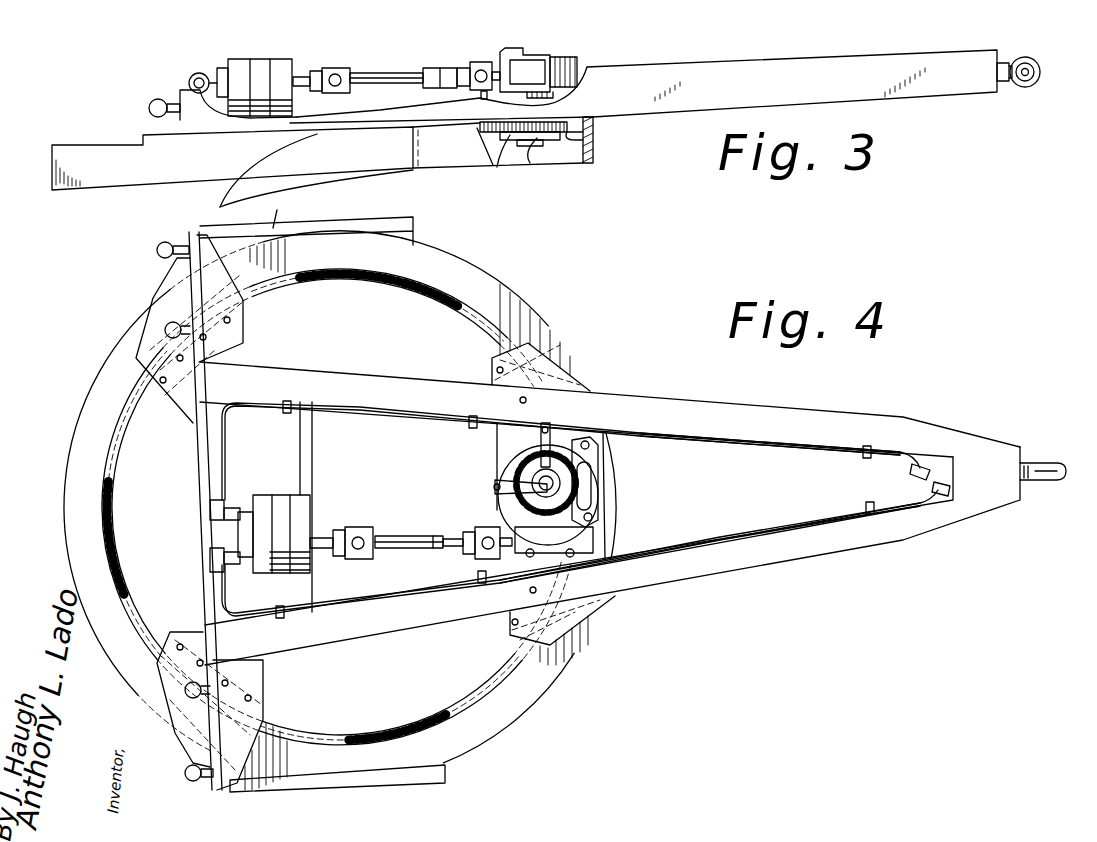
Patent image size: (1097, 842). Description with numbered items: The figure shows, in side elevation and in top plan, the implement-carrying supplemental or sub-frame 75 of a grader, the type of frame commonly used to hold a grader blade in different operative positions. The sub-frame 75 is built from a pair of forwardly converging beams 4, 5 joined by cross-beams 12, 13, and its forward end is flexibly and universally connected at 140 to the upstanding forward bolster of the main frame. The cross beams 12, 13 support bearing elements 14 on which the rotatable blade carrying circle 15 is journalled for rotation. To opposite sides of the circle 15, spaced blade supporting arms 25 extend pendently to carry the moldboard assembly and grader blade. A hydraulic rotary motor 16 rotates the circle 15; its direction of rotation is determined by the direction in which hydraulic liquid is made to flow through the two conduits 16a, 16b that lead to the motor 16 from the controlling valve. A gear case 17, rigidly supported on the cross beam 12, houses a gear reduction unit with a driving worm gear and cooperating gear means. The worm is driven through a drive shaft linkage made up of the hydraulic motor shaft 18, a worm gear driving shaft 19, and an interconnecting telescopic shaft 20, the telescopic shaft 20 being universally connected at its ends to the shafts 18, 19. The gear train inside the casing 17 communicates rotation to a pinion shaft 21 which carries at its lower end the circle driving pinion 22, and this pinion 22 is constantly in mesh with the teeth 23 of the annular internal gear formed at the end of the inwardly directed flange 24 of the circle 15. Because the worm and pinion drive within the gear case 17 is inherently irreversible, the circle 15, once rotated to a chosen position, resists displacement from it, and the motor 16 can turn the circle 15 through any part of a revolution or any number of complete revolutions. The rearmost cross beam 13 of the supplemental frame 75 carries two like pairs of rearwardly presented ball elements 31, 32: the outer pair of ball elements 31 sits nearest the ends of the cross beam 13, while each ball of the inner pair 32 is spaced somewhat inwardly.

In FIG. 3, the beam 4 is at (736, 62).
In FIG. 4, the beam 4 is at (683, 578).
In FIG. 4, the beam 5 is at (733, 430).
In FIG. 4, the cross-beam 12 is at (603, 538).
In FIG. 4, the cross-beam 13 is at (230, 463).
In FIG. 4, the bearing element 14 is at (157, 380).
In FIG. 4, the blade carrying circle 15 is at (485, 290).
In FIG. 3, the hydraulic rotary motor 16 is at (255, 60).
In FIG. 4, the hydraulic rotary motor 16 is at (262, 506).
In FIG. 4, the conduit 16a is at (222, 592).
In FIG. 4, the conduit 16b is at (217, 452).
In FIG. 3, the gear case 17 is at (556, 62).
In FIG. 4, the gear case 17 is at (517, 490).
In FIG. 3, the hydraulic motor shaft 18 is at (306, 72).
In FIG. 4, the hydraulic motor shaft 18 is at (336, 530).
In FIG. 3, the worm gear driving shaft 19 is at (464, 62).
In FIG. 4, the worm gear driving shaft 19 is at (485, 528).
In FIG. 3, the telescopic shaft 20 is at (384, 70).
In FIG. 4, the telescopic shaft 20 is at (410, 549).
In FIG. 3, the pinion shaft 21 is at (527, 165).
In FIG. 4, the pinion shaft 21 is at (523, 472).
In FIG. 3, the circle driving pinion 22 is at (497, 168).
In FIG. 4, the teeth 23 is at (428, 288).
In FIG. 3, the inwardly directed flange 24 is at (594, 136).
In FIG. 3, the blade supporting arm 25 is at (270, 192).
In FIG. 4, the blade supporting arm 25 is at (316, 784).
In FIG. 4, the ball element 31 is at (156, 250).
In FIG. 4, the ball element 32 is at (165, 330).
In FIG. 3, the supplemental frame 75 is at (690, 113).
In FIG. 4, the supplemental frame 75 is at (620, 373).
In FIG. 3, the universal connection 140 is at (1020, 86).
In FIG. 4, the universal connection 140 is at (1053, 487).